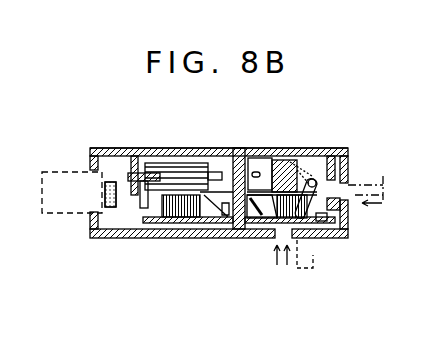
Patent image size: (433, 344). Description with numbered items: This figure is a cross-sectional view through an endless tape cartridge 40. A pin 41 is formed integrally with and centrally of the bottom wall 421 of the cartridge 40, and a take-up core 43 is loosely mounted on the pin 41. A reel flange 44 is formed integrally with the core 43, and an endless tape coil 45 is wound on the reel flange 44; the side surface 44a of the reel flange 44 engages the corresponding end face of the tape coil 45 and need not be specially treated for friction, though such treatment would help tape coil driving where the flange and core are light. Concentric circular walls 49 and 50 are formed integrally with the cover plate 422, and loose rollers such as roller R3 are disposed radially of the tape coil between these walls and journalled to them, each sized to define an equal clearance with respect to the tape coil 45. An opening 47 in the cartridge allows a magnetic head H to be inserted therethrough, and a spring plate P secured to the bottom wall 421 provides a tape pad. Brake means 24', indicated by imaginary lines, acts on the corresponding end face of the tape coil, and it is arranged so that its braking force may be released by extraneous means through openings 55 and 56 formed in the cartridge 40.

The pin 41 is at (233, 238).
The cover plate 422 is at (182, 157).
The bottom wall 421 is at (183, 223).
The magnetic head H is at (58, 204).
The opening 47 is at (93, 216).
The spring plate P is at (110, 208).
The circular wall 49 is at (136, 157).
The loose roller R3 is at (163, 178).
The take-up core 43 is at (243, 238).
The circular wall 50 is at (226, 152).
The endless tape coil 45 is at (277, 156).
The opening 55 is at (299, 242).
The reel flange 44 is at (303, 240).
The side surface of reel flange 44a is at (349, 221).
The brake means 24' is at (357, 241).
The opening 56 is at (350, 183).
The endless tape cartridge 40 is at (292, 301).